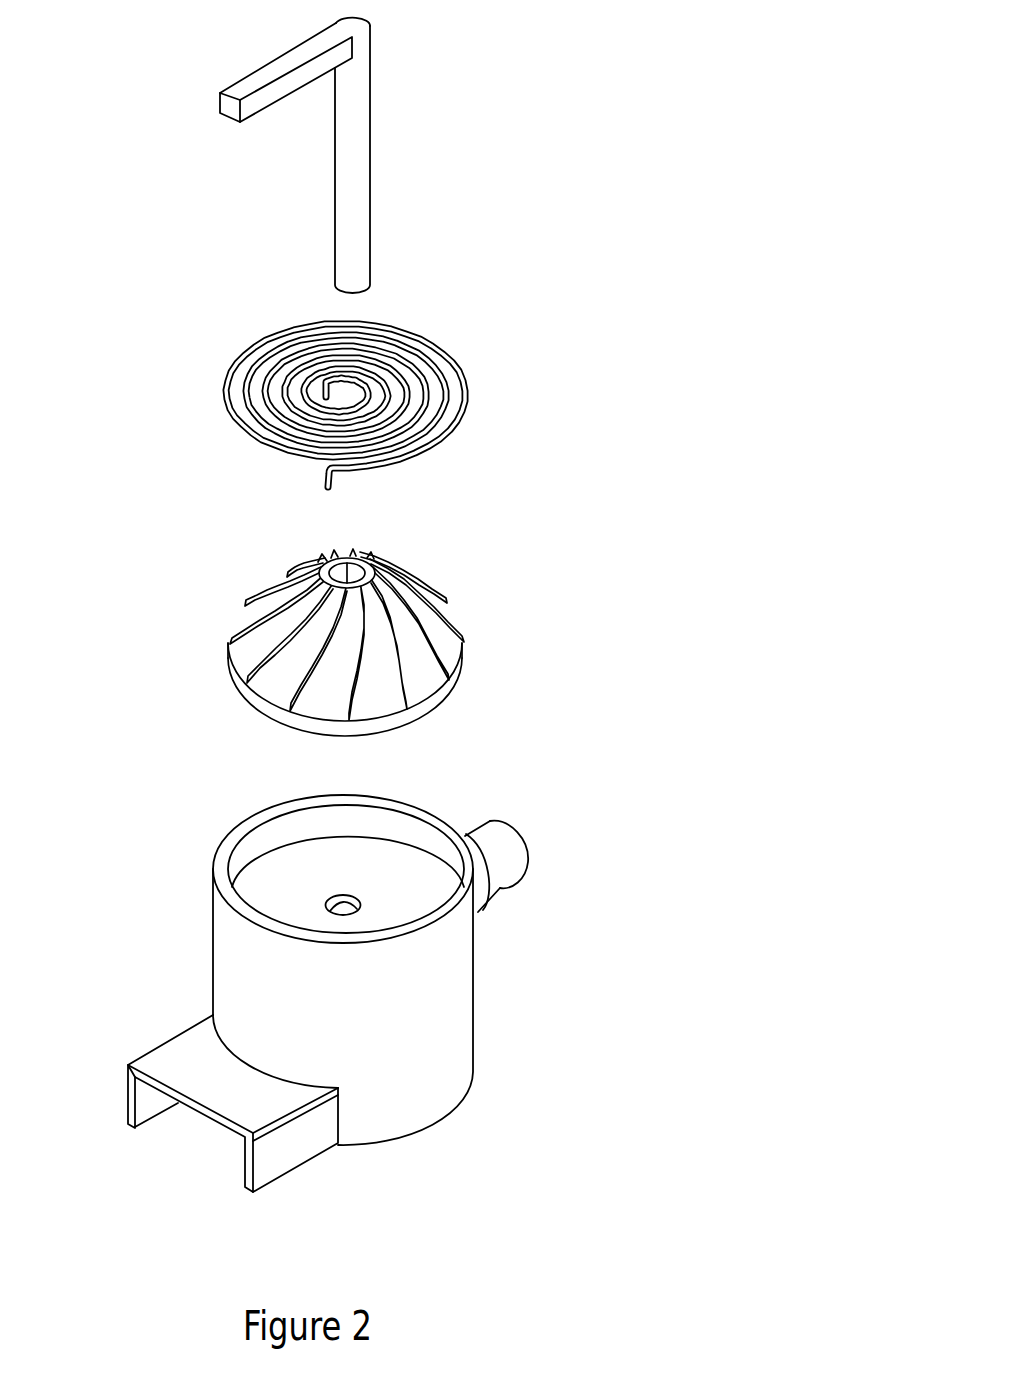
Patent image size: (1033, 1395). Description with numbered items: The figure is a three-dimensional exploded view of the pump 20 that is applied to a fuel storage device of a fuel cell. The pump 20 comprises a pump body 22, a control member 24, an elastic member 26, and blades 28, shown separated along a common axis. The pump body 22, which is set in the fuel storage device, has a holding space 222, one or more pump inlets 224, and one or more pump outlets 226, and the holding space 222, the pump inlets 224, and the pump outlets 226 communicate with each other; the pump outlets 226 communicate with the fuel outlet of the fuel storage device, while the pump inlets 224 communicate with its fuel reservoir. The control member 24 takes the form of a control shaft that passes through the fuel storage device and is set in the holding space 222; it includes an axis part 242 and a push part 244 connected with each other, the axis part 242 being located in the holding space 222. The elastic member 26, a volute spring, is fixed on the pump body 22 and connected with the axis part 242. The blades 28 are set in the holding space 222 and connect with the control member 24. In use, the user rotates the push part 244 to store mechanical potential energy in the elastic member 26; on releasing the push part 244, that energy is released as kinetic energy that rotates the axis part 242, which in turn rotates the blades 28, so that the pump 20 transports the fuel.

The pump 20 is at (637, 83).
The pump body 22 is at (525, 977).
The control member 24 is at (415, 192).
The elastic member 26 is at (455, 372).
The blades 28 is at (487, 603).
The holding space 222 is at (427, 1040).
The pump inlets 224 is at (277, 1155).
The pump outlets 226 is at (493, 853).
The axis part 242 is at (352, 157).
The push part 244 is at (297, 62).